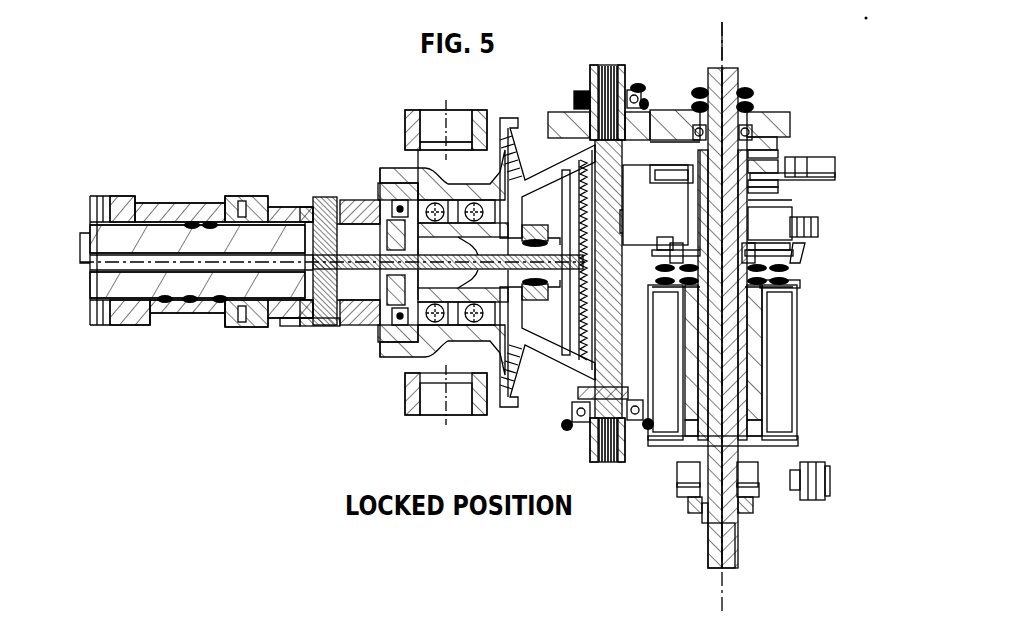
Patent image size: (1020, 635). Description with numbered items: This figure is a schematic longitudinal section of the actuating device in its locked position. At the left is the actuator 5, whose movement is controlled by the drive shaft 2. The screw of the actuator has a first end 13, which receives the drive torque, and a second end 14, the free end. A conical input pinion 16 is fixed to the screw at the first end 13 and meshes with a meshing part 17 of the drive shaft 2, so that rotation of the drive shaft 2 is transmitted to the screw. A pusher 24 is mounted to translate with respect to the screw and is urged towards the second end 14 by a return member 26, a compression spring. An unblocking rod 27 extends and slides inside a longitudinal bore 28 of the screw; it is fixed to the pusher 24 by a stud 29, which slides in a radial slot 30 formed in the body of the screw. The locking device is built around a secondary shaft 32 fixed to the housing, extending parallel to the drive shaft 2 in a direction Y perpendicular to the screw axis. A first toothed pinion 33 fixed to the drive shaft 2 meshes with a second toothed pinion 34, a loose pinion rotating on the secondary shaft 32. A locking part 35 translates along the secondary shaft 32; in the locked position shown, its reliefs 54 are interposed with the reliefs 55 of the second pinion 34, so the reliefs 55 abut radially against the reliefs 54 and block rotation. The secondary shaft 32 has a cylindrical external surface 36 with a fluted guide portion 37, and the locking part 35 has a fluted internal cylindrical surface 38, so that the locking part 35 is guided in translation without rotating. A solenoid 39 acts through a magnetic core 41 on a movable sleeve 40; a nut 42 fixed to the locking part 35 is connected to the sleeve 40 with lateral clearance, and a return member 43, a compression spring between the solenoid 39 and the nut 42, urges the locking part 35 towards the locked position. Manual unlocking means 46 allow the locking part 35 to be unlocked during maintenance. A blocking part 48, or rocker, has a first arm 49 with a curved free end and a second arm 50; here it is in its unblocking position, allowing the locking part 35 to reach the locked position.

The actuator 5 is at (236, 160).
The second end of the screw 14 is at (102, 242).
The longitudinal bore 28 is at (142, 263).
The pusher 24 is at (284, 205).
The stud 29 is at (327, 212).
The unblocking rod 27 is at (330, 210).
The return member 26 is at (355, 210).
The radial slot 30 is at (322, 302).
The conical input pinion 16 is at (543, 357).
The first end of the screw 13 is at (553, 245).
The drive shaft 2 is at (612, 364).
The first toothed pinion 33 is at (632, 140).
The meshing part 17 is at (643, 155).
The cylindrical external surface 36 is at (693, 158).
The second arm 50 is at (653, 223).
The secondary shaft 32 is at (730, 458).
The second toothed pinion 34 is at (773, 113).
The reliefs of the second pinion 55 is at (767, 147).
The reliefs of the locking part 54 is at (767, 172).
The return member 43 is at (820, 158).
The locking part 35 is at (760, 187).
The fluted guide portion 37 is at (775, 207).
The first arm 49 is at (787, 225).
The blocking part 48 is at (787, 236).
The internal cylindrical surface 38 is at (798, 244).
The nut 42 is at (787, 275).
The magnetic core 41 is at (753, 316).
The sleeve 40 is at (745, 338).
The solenoid 39 is at (780, 377).
The manual unlocking means 46 is at (806, 497).
The direction Y is at (724, 34).